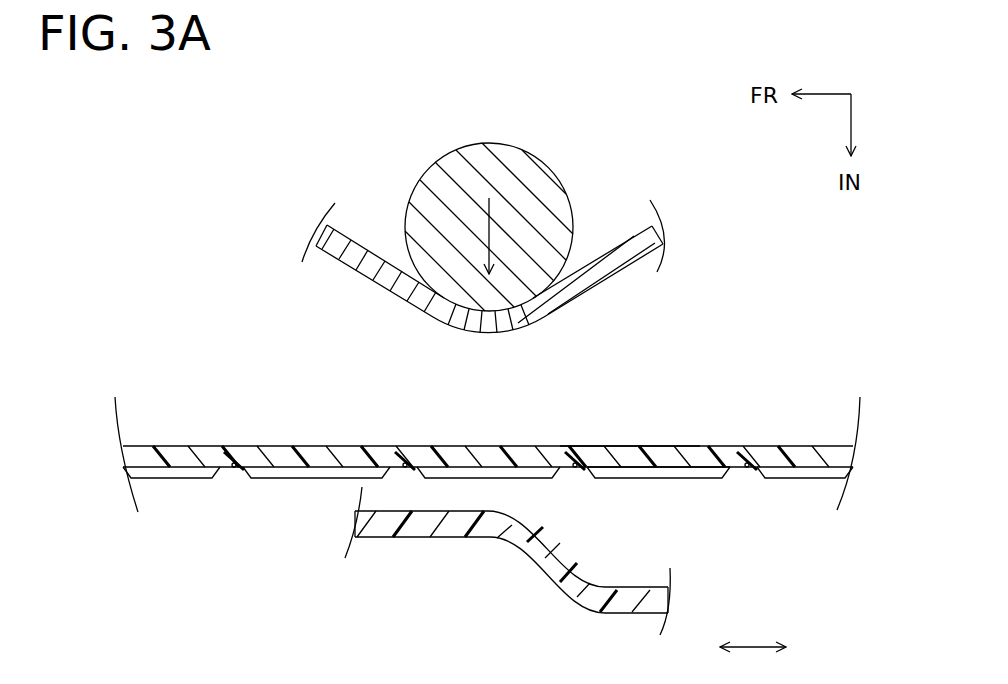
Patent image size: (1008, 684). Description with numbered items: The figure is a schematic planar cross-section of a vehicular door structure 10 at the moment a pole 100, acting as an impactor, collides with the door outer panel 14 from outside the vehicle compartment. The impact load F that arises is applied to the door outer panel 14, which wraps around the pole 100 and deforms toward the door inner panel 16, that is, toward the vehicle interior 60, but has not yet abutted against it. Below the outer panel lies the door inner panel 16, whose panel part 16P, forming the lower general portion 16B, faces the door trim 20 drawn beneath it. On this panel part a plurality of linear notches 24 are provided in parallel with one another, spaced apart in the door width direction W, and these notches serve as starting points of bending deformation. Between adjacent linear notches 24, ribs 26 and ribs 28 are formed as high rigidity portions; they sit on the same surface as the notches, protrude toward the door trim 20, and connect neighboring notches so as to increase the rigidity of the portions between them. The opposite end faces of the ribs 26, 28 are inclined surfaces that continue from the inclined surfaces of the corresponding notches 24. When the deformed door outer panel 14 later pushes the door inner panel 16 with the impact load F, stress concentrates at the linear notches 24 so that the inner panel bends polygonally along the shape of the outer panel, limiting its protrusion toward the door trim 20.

The vehicle interior structure 10 is at (477, 207).
The door outer panel 14 is at (356, 230).
The pole 100 is at (565, 180).
The impact load F is at (488, 230).
The door inner panel 16 is at (487, 453).
The lower general portion 16B is at (628, 446).
The panel part 16P is at (614, 492).
The linear notches 24 is at (232, 460).
The ribs 26 is at (178, 480).
The ribs 28 is at (468, 481).
The door trim 20 is at (519, 557).
The vehicle interior 60 is at (528, 674).
The door width direction W is at (753, 645).